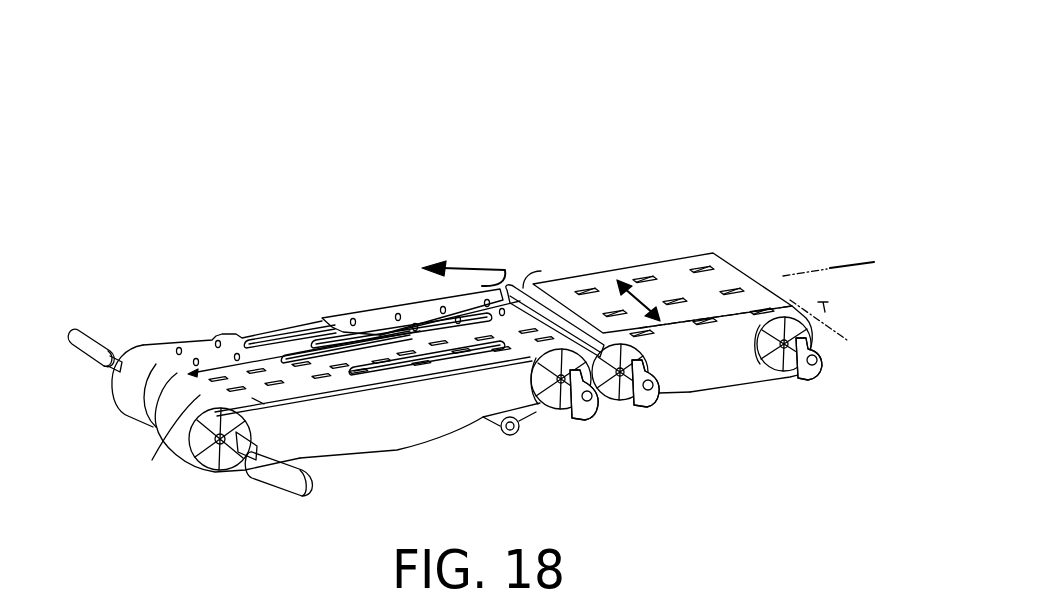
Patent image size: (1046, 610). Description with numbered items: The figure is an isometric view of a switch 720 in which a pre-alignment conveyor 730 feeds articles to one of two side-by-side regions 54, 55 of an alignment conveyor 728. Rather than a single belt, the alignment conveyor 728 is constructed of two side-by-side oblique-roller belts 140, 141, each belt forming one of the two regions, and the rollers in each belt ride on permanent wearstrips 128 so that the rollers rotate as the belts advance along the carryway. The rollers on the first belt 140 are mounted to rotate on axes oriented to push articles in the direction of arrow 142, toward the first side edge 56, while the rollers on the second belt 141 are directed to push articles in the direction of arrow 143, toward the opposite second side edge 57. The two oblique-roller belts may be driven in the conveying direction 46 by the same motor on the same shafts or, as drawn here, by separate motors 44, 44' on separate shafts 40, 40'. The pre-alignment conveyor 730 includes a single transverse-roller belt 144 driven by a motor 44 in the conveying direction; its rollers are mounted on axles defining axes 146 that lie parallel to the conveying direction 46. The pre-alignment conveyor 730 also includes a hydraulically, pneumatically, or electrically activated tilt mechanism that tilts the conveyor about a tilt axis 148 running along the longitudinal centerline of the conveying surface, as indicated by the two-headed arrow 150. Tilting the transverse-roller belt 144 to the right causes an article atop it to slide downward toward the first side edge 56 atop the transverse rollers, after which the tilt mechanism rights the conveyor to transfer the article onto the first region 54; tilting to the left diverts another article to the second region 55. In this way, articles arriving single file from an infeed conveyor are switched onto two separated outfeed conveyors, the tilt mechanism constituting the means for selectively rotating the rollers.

The switch 720 is at (303, 138).
The alignment conveyor 728 is at (486, 243).
The pre-alignment conveyor 730 is at (694, 207).
The motor 44 is at (298, 304).
The motor 44' is at (297, 484).
The shaft 40 is at (79, 377).
The shaft 40' is at (230, 484).
The conveying direction 46 is at (464, 277).
The first region 54 is at (118, 413).
The second region 55 is at (153, 460).
The first side edge 56 is at (413, 300).
The second side edge 57 is at (500, 365).
The wearstrips 128 is at (297, 334).
The first belt 140 is at (377, 317).
The second belt 141 is at (350, 378).
The arrow 142 is at (228, 357).
The arrow 143 is at (241, 391).
The transverse-roller belt 144 is at (720, 263).
The axes 146 is at (838, 328).
The tilt axis 148 is at (840, 268).
The two-headed arrow 150 is at (755, 273).